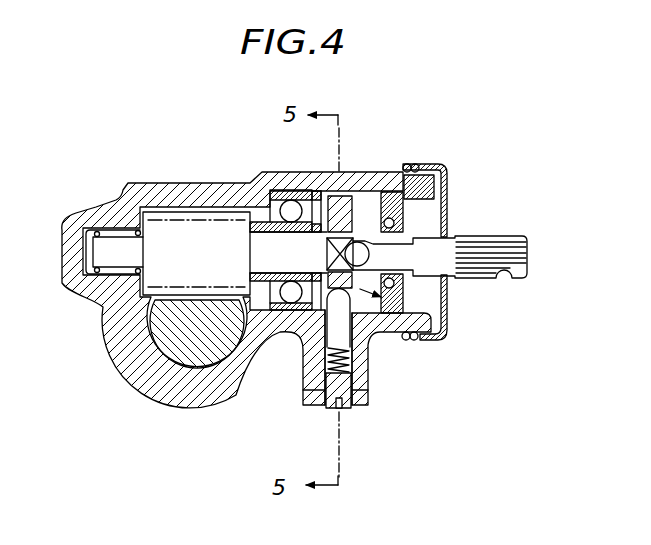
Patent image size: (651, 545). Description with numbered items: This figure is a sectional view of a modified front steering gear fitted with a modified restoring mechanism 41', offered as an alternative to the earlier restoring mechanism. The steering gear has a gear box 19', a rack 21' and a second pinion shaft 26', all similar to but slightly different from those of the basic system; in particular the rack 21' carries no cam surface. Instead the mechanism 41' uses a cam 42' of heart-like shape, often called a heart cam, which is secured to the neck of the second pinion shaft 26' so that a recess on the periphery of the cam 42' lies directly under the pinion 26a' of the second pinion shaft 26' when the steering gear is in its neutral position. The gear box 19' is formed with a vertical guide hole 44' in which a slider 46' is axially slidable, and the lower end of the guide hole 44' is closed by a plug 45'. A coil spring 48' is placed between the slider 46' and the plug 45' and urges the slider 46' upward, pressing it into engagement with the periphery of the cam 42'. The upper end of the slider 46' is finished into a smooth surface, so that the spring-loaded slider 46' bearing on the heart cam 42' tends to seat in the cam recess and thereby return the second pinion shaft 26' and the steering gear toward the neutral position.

The gear box 19' is at (254, 272).
The rack 21' is at (151, 350).
The pinion 26a' is at (206, 219).
The cam 42' is at (363, 206).
The second pinion shaft 26' is at (427, 232).
The restoring mechanism 41' is at (445, 256).
The guide hole 44' is at (391, 326).
The slider 46' is at (377, 357).
The coil spring 48' is at (306, 389).
The plug 45' is at (371, 412).